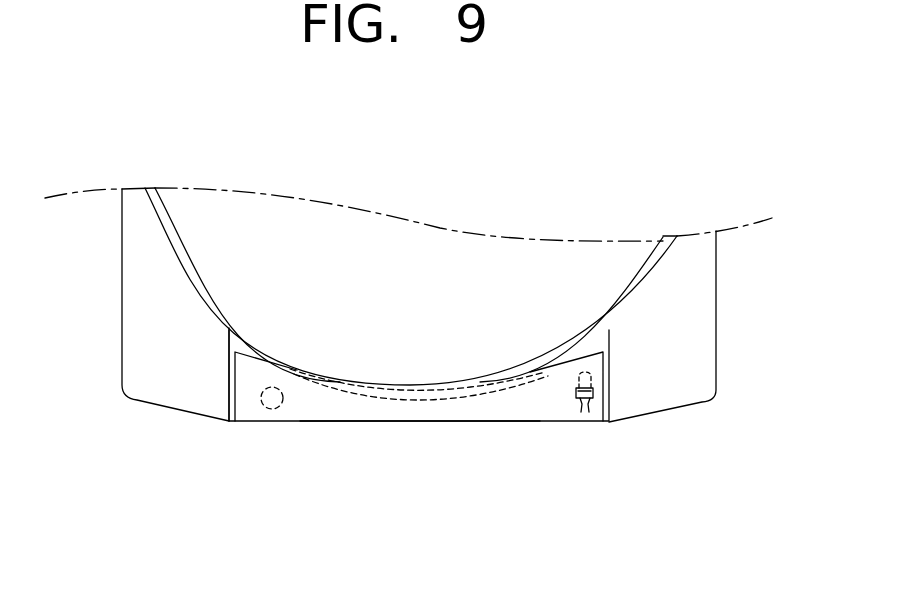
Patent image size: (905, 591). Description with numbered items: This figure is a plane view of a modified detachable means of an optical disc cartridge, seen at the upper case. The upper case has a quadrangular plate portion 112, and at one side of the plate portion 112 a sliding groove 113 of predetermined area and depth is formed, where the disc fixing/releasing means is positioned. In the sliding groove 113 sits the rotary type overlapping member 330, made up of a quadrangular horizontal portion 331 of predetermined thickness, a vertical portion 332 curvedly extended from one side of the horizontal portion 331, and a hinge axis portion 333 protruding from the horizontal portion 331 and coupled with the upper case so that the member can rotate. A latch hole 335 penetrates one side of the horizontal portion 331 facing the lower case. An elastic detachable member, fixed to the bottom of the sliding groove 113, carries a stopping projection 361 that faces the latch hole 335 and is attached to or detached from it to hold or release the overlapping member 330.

The plate portion 112 is at (693, 310).
The sliding groove 113 is at (229, 344).
The rotary type overlapping member 330 is at (415, 423).
The horizontal portion 331 is at (308, 402).
The vertical portion 332 is at (350, 422).
The hinge axis portion 333 is at (270, 407).
The latch hole 335 is at (589, 412).
The stopping projection 361 is at (581, 412).